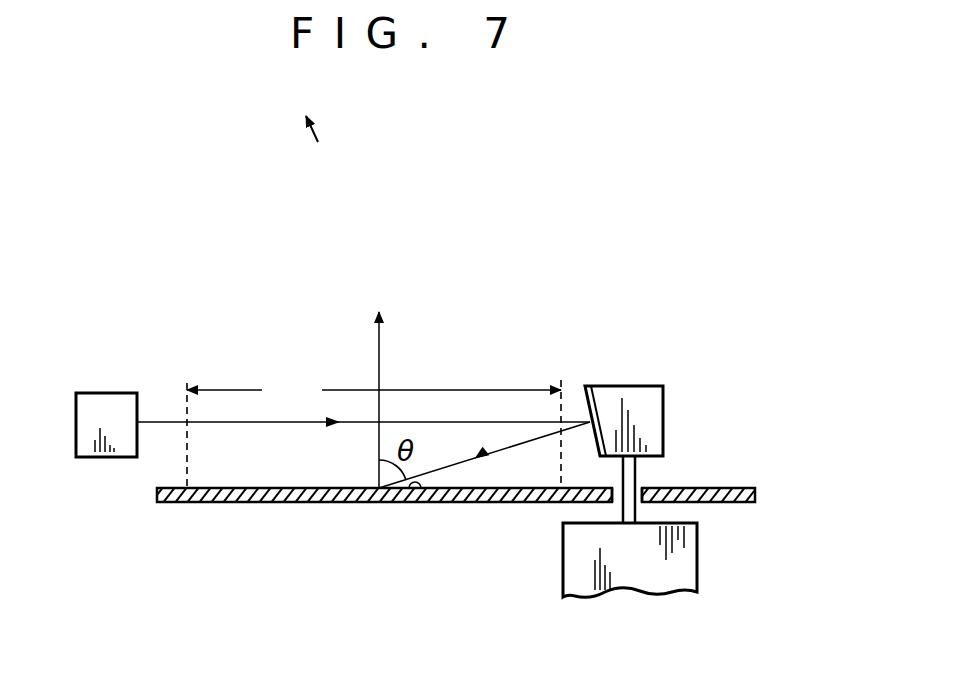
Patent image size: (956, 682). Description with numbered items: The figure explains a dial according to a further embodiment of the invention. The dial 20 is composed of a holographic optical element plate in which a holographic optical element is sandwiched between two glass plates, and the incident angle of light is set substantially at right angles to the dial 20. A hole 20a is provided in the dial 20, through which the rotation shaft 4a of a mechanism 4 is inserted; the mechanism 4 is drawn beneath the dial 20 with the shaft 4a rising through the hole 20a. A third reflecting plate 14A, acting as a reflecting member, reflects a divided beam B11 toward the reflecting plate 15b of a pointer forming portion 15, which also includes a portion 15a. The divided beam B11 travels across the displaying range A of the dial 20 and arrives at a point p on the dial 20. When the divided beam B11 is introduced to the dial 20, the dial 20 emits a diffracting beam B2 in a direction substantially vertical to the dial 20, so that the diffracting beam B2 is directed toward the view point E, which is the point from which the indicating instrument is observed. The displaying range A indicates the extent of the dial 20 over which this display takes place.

The third reflecting plate 14A is at (108, 400).
The divided beam B11 is at (232, 423).
The displaying range A is at (374, 431).
The diffracting beam B2 is at (380, 345).
The reflection point p is at (418, 503).
The dial 20 is at (335, 503).
The opening 20a is at (648, 487).
The pointer forming portion 15 is at (662, 384).
The light receiving portion 15a is at (655, 416).
The reflecting plate 15b is at (590, 384).
The shaft 4a is at (628, 492).
The mechanism 4 is at (634, 583).
The view point E is at (330, 126).